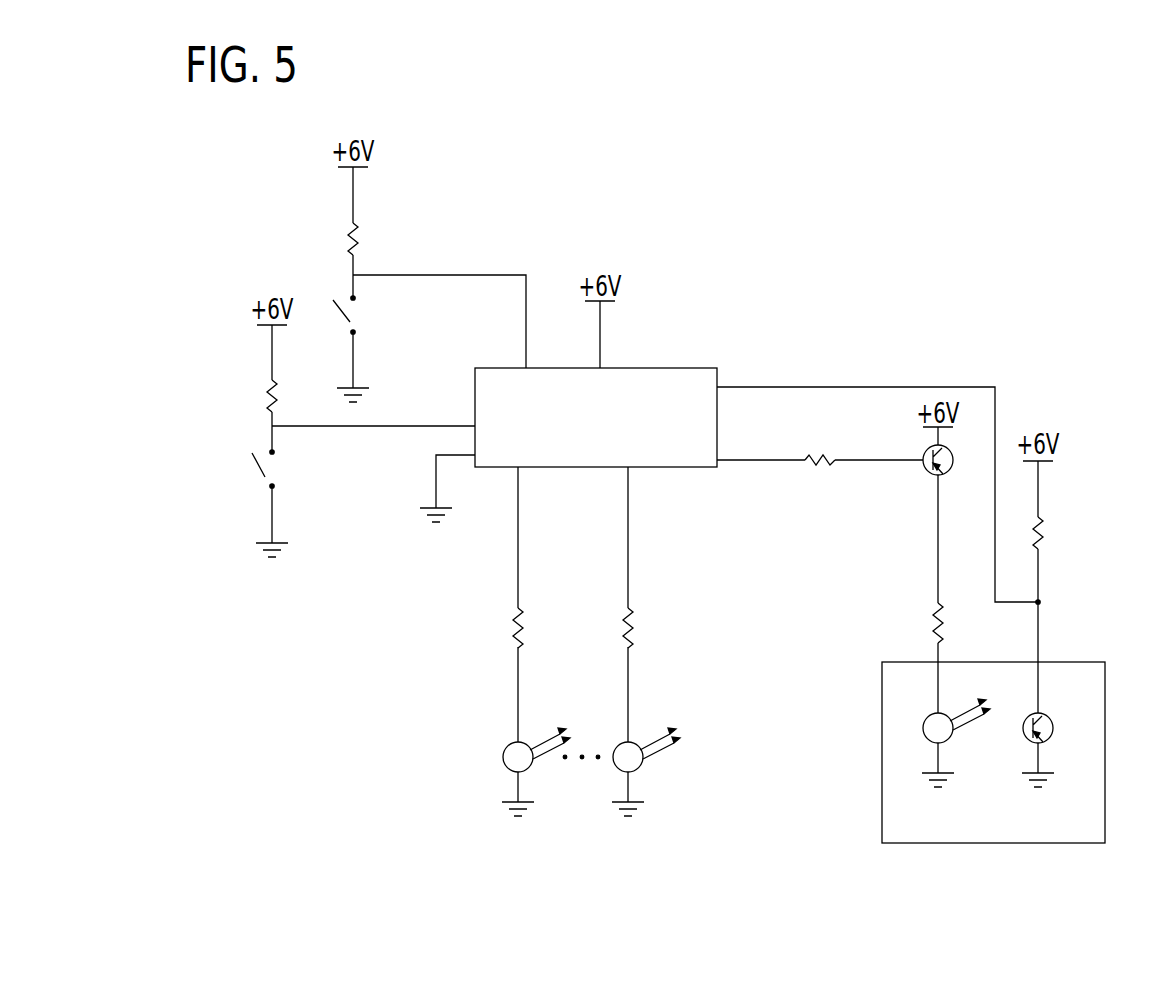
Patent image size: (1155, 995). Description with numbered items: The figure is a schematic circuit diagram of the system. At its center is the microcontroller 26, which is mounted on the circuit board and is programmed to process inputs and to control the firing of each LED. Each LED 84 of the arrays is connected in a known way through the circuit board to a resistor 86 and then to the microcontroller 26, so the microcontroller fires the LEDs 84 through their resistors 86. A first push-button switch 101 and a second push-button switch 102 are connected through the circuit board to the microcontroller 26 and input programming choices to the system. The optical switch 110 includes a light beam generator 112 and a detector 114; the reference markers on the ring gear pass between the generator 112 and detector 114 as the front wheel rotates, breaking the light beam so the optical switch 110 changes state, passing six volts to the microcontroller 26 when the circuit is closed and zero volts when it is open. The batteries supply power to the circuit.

The microcontroller 26 is at (678, 367).
The LEDs 84 is at (505, 758).
The resistor 86 is at (625, 627).
The first push-button switch 101 is at (355, 317).
The second push-button switch 102 is at (263, 473).
The optical switch 110 is at (922, 845).
The light beam generator 112 is at (903, 705).
The detector 114 is at (1053, 720).